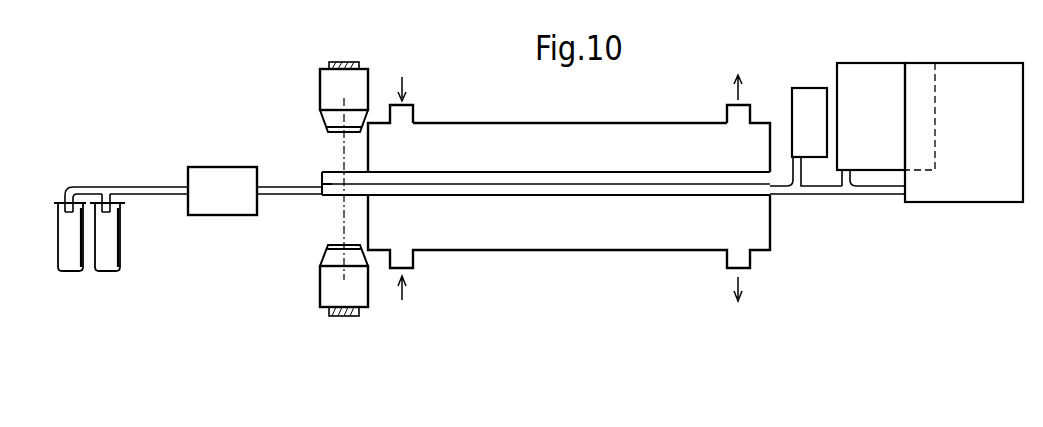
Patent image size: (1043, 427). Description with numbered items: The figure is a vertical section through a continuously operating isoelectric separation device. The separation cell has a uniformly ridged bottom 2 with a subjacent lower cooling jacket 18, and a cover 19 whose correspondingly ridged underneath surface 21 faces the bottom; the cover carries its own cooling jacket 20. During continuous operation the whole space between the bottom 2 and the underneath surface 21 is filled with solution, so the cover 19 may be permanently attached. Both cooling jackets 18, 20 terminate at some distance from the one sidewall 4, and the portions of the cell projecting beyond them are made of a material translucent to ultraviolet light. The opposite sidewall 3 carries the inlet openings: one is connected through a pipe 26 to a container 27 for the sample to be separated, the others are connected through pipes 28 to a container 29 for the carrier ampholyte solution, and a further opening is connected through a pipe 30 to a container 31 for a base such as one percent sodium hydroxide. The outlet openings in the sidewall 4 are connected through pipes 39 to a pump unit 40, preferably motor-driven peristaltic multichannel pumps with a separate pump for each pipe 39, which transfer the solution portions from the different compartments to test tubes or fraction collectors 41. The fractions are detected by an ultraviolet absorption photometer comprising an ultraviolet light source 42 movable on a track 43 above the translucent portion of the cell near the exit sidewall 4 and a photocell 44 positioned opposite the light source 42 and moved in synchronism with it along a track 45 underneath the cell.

The bottom 2 is at (563, 195).
The sidewall 3 is at (773, 196).
The sidewall 4 is at (322, 178).
The cooling jacket 18 is at (607, 250).
The cover 19 is at (548, 123).
The cooling jacket 20 is at (628, 135).
The underneath surface 21 is at (550, 172).
The pipe 26 is at (788, 168).
The container 27 is at (815, 96).
The pipes 28 is at (895, 195).
The container 29 is at (980, 72).
The pipe 30 is at (848, 188).
The container 31 is at (866, 72).
The pipes 39 is at (320, 194).
The pump unit 40 is at (233, 207).
The test tubes 41 is at (70, 272).
The ultraviolet light source 42 is at (332, 88).
The track 43 is at (340, 61).
The photocell 44 is at (330, 283).
The track 45 is at (345, 318).